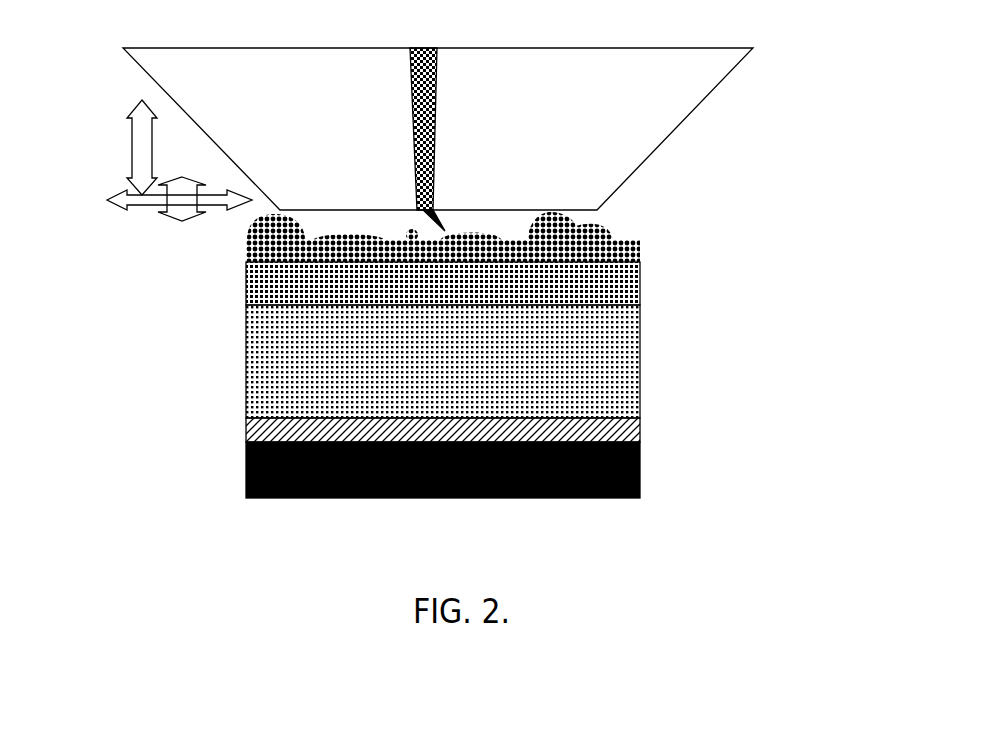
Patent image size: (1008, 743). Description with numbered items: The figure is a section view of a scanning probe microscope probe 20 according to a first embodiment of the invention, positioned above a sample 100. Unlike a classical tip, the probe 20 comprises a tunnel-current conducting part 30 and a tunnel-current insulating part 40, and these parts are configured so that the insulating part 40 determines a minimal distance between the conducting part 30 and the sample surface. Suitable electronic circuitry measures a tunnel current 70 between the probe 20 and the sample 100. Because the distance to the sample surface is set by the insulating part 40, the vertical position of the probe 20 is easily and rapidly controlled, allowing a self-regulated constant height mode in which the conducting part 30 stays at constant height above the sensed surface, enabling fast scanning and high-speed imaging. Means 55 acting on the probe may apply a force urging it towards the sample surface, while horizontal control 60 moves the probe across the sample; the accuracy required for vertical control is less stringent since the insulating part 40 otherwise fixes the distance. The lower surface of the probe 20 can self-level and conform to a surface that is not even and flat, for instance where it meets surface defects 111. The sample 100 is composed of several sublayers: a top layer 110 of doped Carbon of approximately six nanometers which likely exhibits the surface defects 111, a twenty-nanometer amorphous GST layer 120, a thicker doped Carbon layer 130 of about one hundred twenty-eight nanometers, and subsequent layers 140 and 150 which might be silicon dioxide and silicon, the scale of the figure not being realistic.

The SPM probe 20 is at (743, 93).
The tunnel-current conducting part 30 is at (387, 115).
The tunnel-current insulating part 40 is at (572, 136).
The means acting on the probe 55 is at (135, 138).
The horizontal control 60 is at (140, 212).
The tunnel current 70 is at (541, 192).
The sample 100 is at (571, 343).
The top layer 110 is at (585, 259).
The surface defects 111 is at (508, 230).
The amorphous GST layer 120 is at (552, 298).
The thicker doped Carbon layer 130 is at (553, 365).
The SiO2 layer 140 is at (562, 433).
The Si layer 150 is at (575, 472).